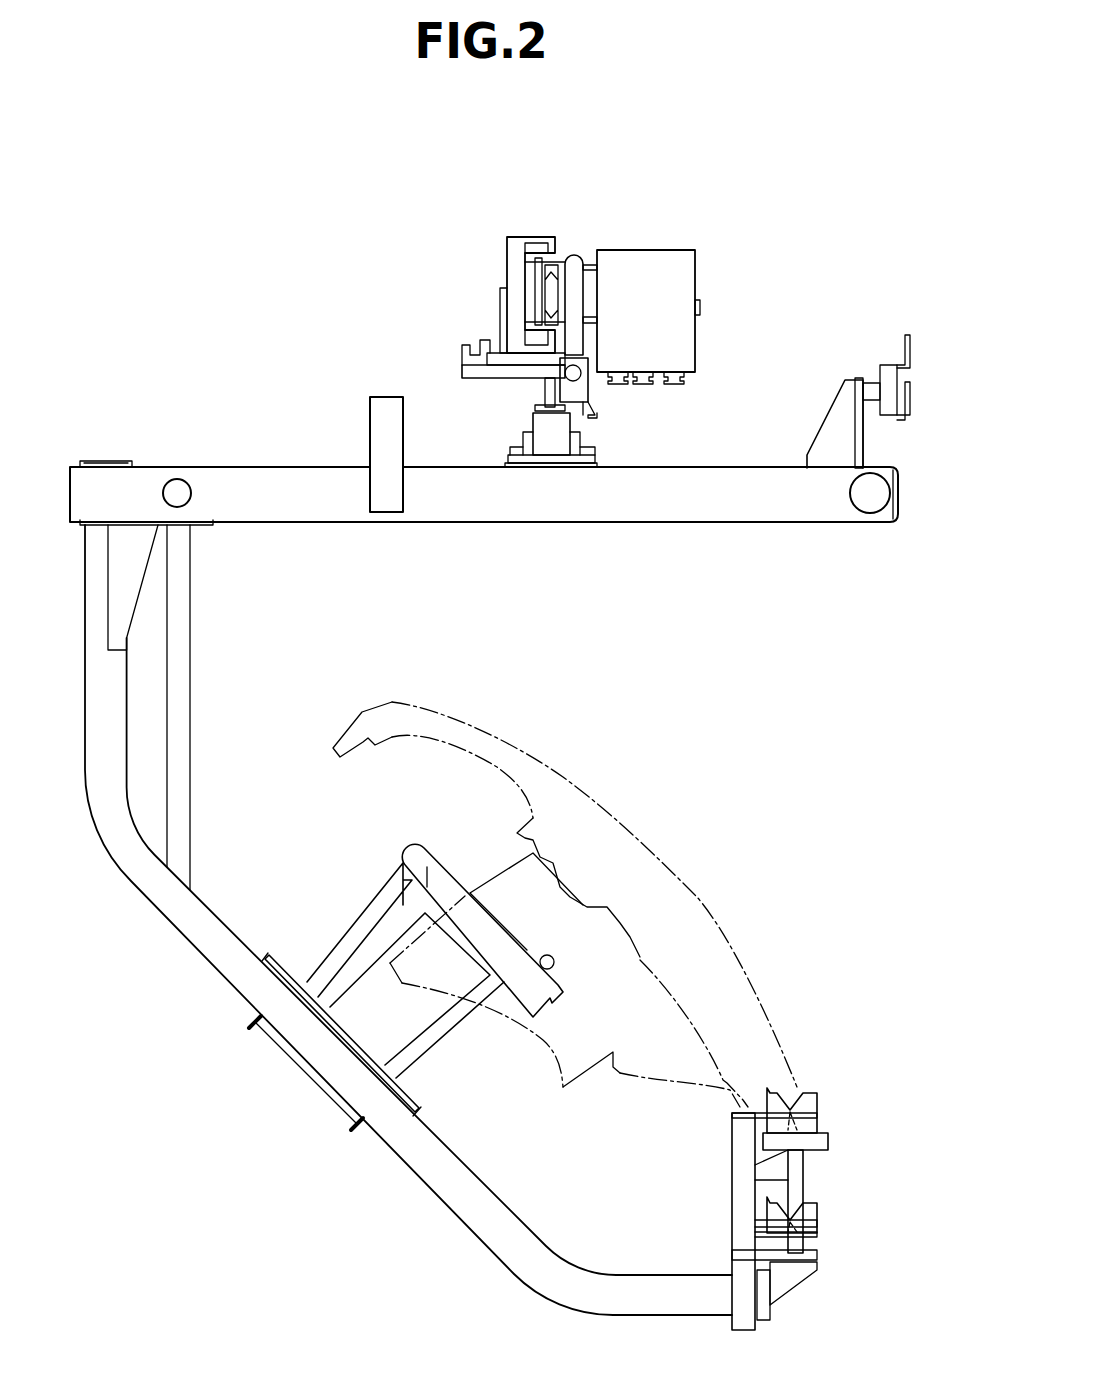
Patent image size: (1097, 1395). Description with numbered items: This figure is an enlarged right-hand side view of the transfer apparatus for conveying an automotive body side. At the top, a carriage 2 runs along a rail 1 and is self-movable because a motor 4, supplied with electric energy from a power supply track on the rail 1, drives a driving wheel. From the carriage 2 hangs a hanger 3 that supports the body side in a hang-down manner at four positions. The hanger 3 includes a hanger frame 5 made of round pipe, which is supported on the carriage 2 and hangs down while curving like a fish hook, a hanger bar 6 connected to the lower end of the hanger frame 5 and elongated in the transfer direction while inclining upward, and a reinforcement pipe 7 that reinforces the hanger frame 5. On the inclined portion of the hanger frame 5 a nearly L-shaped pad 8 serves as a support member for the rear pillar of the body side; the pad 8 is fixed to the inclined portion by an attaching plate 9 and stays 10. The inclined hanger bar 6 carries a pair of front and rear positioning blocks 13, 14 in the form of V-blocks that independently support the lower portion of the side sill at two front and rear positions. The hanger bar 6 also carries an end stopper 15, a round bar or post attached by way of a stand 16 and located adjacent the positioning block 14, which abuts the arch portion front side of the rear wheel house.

The rail 1 is at (517, 231).
The carriage 2 is at (282, 464).
The hanger 3 is at (174, 932).
The motor 4 is at (666, 275).
The hanger frame 5 is at (383, 1150).
The hanger bar 6 is at (735, 1163).
The reinforcement pipe 7 is at (178, 638).
The pad 8 is at (447, 858).
The attaching plate 9 is at (352, 1020).
The stays 10 is at (347, 977).
The front positioning block 13 is at (815, 1107).
The rear positioning block 14 is at (818, 1220).
The end stopper 15 is at (830, 1140).
The stand 16 is at (800, 1177).